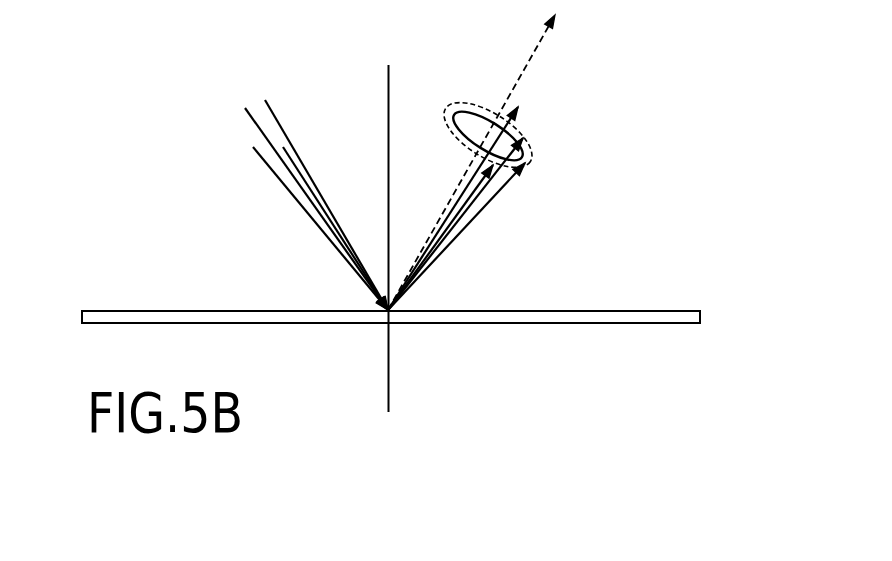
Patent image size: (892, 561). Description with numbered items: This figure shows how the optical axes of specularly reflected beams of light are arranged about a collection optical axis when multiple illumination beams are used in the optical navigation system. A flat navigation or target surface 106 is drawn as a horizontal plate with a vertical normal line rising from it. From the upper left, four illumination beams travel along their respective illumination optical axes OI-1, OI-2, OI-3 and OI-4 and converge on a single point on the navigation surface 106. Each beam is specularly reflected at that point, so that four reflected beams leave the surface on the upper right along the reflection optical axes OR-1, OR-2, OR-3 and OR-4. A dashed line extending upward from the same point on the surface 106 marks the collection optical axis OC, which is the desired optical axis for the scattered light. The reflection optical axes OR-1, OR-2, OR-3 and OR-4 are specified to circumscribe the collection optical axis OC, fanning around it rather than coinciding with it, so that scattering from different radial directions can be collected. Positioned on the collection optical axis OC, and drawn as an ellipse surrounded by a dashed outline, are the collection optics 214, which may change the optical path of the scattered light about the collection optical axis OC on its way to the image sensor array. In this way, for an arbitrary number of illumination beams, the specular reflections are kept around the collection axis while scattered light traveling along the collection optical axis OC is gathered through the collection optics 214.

The navigation or target surface 106 is at (658, 311).
The collection optics 214 is at (470, 108).
The illumination optical axis OI-1 is at (252, 120).
The illumination optical axis OI-2 is at (295, 200).
The illumination optical axis OI-3 is at (275, 112).
The illumination optical axis OI-4 is at (305, 173).
The reflection optical axis OR-1 is at (516, 119).
The reflection optical axis OR-2 is at (523, 141).
The reflection optical axis OR-3 is at (502, 176).
The reflection optical axis OR-4 is at (475, 197).
The collection optical axis OC is at (543, 38).